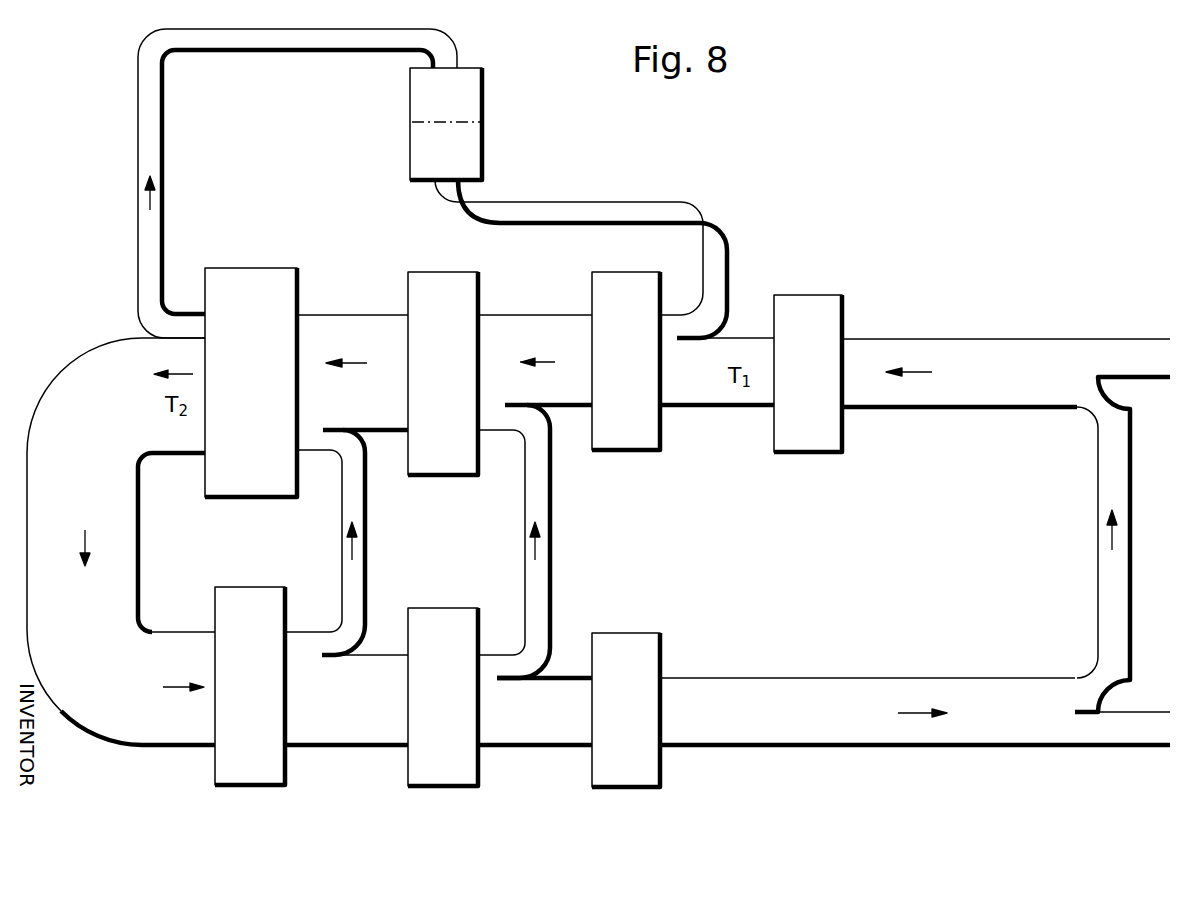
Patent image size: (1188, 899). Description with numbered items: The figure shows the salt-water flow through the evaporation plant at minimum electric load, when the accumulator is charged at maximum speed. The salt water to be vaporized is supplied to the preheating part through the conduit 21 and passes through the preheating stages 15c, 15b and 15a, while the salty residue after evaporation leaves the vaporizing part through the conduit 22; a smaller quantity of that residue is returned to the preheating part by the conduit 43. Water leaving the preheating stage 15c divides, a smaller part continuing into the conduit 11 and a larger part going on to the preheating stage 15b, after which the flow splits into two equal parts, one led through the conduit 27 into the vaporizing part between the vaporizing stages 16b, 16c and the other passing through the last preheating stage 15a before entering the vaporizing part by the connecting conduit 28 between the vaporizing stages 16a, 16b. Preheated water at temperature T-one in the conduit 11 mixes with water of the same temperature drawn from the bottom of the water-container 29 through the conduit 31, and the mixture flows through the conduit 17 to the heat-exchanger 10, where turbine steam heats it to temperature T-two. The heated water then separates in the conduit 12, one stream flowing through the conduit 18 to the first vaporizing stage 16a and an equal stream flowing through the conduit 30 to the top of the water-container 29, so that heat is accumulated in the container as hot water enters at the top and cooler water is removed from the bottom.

The heat-exchanger 10 is at (259, 278).
The conduit 11 is at (717, 255).
The conduit 12 is at (194, 340).
The preheating stage 15a is at (453, 285).
The preheating stage 15b is at (640, 287).
The preheating stage 15c is at (810, 303).
The vaporizing stage 16a is at (258, 600).
The vaporizing stage 16b is at (447, 620).
The vaporizing stage 16c is at (637, 645).
The conduit 17 is at (353, 325).
The conduit 18 is at (118, 535).
The conduit 21 is at (1093, 355).
The conduit 22 is at (1132, 727).
The conduit 27 is at (537, 525).
The connecting line 28 is at (355, 525).
The water-container 29 is at (410, 100).
The conduit 30 is at (274, 35).
The conduit 31 is at (608, 215).
The conduit 43 is at (1110, 503).